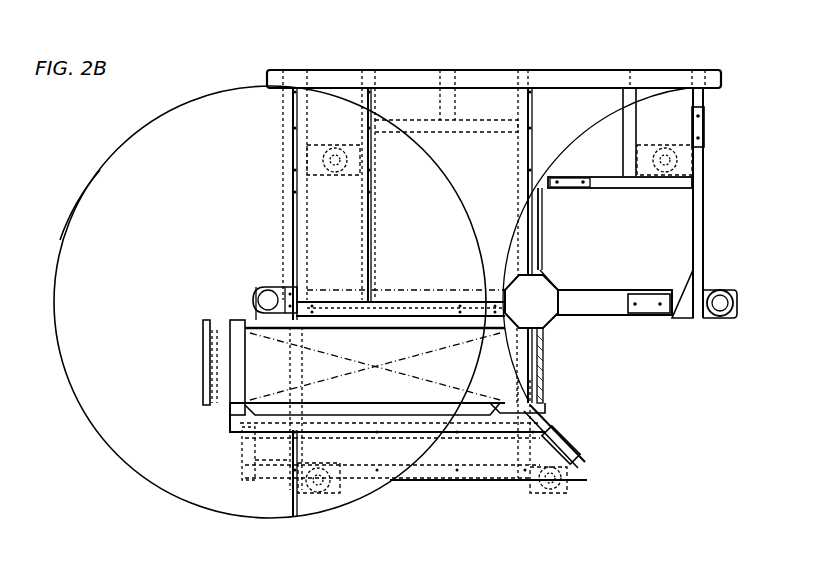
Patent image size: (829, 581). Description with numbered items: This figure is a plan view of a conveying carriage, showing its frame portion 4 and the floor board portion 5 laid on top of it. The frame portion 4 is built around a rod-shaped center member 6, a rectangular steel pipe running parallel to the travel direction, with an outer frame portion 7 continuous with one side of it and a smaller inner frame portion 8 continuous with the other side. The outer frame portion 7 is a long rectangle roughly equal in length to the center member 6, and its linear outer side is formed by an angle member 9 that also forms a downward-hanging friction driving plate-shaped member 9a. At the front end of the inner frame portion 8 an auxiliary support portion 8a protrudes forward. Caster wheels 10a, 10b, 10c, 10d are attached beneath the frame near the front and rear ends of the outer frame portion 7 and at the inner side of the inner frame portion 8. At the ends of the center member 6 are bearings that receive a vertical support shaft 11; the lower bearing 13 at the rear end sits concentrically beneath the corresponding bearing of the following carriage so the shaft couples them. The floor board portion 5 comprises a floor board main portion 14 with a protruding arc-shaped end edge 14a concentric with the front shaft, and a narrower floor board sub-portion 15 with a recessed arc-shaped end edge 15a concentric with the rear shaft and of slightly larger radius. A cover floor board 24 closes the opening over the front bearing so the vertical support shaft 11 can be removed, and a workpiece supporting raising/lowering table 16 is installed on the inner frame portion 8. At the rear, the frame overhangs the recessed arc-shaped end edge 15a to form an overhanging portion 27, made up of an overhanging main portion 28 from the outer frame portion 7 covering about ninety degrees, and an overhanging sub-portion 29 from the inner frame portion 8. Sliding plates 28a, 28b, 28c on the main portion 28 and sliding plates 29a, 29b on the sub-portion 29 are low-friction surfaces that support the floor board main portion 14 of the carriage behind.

The frame portion 4 is at (283, 198).
The floor board portion 5 is at (222, 115).
The rod-shaped center member 6 is at (423, 300).
The outer frame portion 7 is at (490, 130).
The inner frame portion 8 is at (417, 480).
The auxiliary support portion 8a is at (247, 460).
The angle member 9 is at (587, 84).
The friction driving plate-shaped member 9a is at (400, 96).
The caster wheel 10a is at (355, 150).
The caster wheel 10b is at (692, 160).
The caster wheel 10c is at (338, 492).
The caster wheel 10d is at (567, 490).
The vertical support shaft 11 is at (263, 290).
The lower bearing 13 is at (733, 318).
The floor board main portion 14 is at (140, 280).
The protruding arc-shaped end edge 14a is at (67, 222).
The floor board sub-portion 15 is at (470, 201).
The recessed arc-shaped end edge 15a is at (540, 252).
The workpiece supporting raising/lowering table 16 is at (386, 356).
The cover floor board 24 is at (253, 305).
The overhanging portion 27 is at (706, 220).
The overhanging main portion 28 is at (700, 256).
The sliding plate 28a is at (570, 190).
The sliding plate 28b is at (706, 126).
The sliding plate 28c is at (647, 313).
The overhanging sub-portion 29 is at (547, 388).
The sliding plate 29a is at (540, 355).
The sliding plate 29b is at (570, 443).